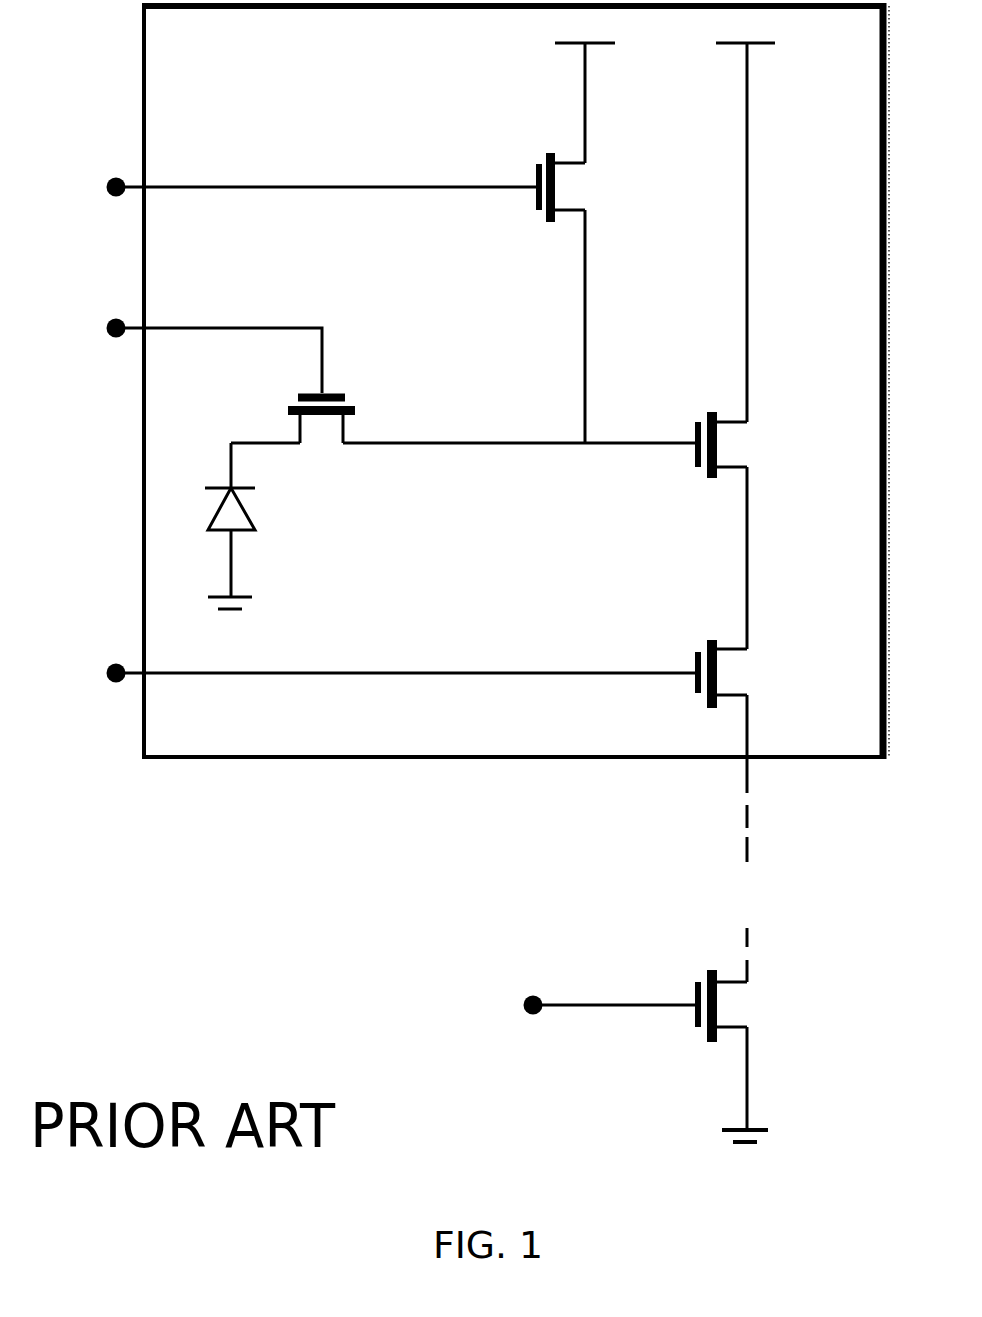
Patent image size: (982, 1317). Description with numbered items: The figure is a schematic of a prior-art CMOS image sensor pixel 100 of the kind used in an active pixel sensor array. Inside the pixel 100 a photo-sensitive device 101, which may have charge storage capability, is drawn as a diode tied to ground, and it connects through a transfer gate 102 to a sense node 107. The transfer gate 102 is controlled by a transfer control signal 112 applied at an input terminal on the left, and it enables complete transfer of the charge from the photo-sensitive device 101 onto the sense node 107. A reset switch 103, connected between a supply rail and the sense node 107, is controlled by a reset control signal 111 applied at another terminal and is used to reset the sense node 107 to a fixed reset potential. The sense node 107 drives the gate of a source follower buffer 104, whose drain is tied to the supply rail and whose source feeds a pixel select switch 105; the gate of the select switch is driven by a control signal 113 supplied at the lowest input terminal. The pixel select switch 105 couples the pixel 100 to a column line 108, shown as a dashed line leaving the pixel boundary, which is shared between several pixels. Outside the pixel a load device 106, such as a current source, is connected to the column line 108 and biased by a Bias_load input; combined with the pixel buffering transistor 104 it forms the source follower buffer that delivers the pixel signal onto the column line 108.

The CMOS image sensor pixel 100 is at (132, 82).
The photo-sensitive device 101 is at (262, 526).
The transfer gate 102 is at (293, 447).
The reset switch 103 is at (595, 187).
The source follower buffer 104 is at (755, 530).
The pixel select switch 105 is at (755, 716).
The load device 106 is at (581, 1056).
The sense node 107 is at (519, 326).
The column line 108 is at (779, 893).
The reset control signal 111 is at (284, 188).
The transfer control signal 112 is at (177, 352).
The row select signal terminal 113 is at (364, 674).